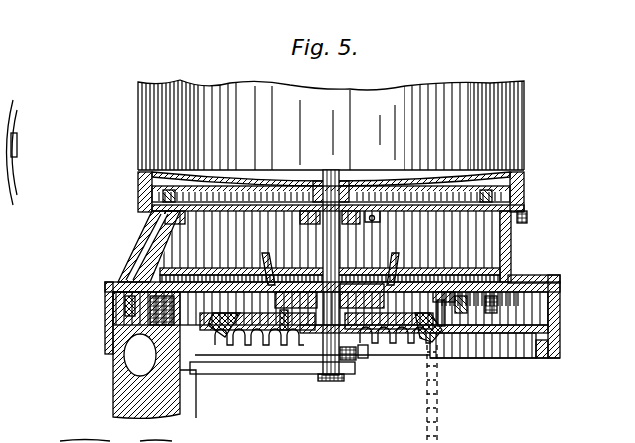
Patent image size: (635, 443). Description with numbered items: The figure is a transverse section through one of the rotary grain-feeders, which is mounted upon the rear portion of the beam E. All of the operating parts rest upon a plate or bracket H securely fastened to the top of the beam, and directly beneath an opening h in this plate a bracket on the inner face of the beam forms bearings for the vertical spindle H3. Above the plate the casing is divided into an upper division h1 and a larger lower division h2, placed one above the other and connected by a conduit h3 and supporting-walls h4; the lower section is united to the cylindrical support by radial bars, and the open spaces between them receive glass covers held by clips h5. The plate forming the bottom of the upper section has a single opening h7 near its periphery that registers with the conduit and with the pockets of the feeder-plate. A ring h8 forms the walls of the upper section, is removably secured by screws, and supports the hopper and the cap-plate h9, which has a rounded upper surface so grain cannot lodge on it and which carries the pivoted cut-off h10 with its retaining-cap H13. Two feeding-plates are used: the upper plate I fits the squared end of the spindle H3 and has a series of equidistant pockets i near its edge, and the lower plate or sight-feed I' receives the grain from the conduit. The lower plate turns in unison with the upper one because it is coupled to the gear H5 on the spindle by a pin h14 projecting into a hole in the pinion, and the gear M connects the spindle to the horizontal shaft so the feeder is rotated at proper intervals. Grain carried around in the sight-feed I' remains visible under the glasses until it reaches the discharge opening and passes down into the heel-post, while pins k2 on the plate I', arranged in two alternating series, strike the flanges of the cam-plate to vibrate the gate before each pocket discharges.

The upper feeding-plate I is at (308, 187).
The lower feeding-plate or sight-feed I' is at (330, 271).
The pockets i is at (526, 190).
The opening in plate H h is at (443, 328).
The upper division of casing h1 is at (331, 180).
The lower division of casing h2 is at (565, 301).
The conduit h3 is at (152, 241).
The supporting-walls h4 is at (562, 328).
The clips h5 is at (509, 242).
The opening in plate h6 h7 is at (155, 207).
The ring h8 is at (522, 193).
The cap-plate h9 is at (337, 170).
The cut-off h10 is at (97, 436).
The pin h14 is at (303, 345).
The plate or bracket H is at (200, 340).
The vertical spindle H3 is at (352, 376).
The gear H5 is at (433, 428).
The retaining-cap H13 is at (535, 280).
The pins k2 is at (462, 302).
The gear M is at (394, 330).
The beam E is at (112, 372).